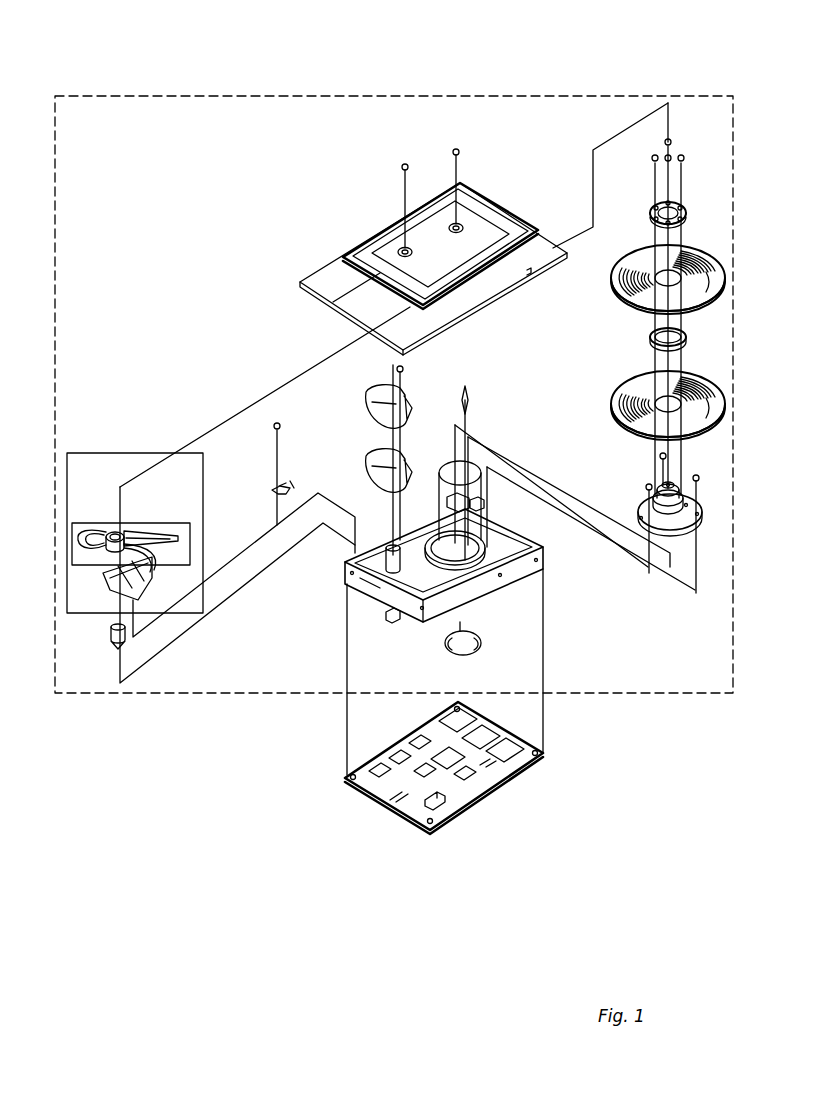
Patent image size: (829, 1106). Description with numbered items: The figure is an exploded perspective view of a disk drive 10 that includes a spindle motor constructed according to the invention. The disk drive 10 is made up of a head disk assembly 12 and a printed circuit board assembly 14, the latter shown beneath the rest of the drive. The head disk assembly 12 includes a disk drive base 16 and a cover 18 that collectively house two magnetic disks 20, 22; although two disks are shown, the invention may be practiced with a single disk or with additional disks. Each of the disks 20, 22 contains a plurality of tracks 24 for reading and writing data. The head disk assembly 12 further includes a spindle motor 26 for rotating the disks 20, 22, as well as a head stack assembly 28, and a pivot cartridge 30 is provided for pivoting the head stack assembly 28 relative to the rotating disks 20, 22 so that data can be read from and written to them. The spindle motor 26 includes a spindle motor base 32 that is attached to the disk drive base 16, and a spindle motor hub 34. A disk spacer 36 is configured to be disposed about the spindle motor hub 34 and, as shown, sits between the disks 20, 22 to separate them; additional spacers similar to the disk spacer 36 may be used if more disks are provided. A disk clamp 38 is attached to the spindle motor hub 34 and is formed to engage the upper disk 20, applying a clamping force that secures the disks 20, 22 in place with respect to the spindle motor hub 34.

The disk drive 10 is at (291, 60).
The head disk assembly 12 is at (677, 697).
The printed circuit board assembly 14 is at (493, 777).
The disk drive base 16 is at (503, 582).
The cover 18 is at (378, 234).
The magnetic disk 20 is at (648, 256).
The magnetic disk 22 is at (648, 382).
The tracks 24 is at (714, 287).
The spindle motor 26 is at (632, 484).
The head stack assembly 28 is at (82, 536).
The pivot cartridge 30 is at (112, 639).
The spindle motor base 32 is at (695, 525).
The spindle motor hub 34 is at (703, 502).
The disk spacer 36 is at (652, 340).
The disk clamp 38 is at (652, 211).